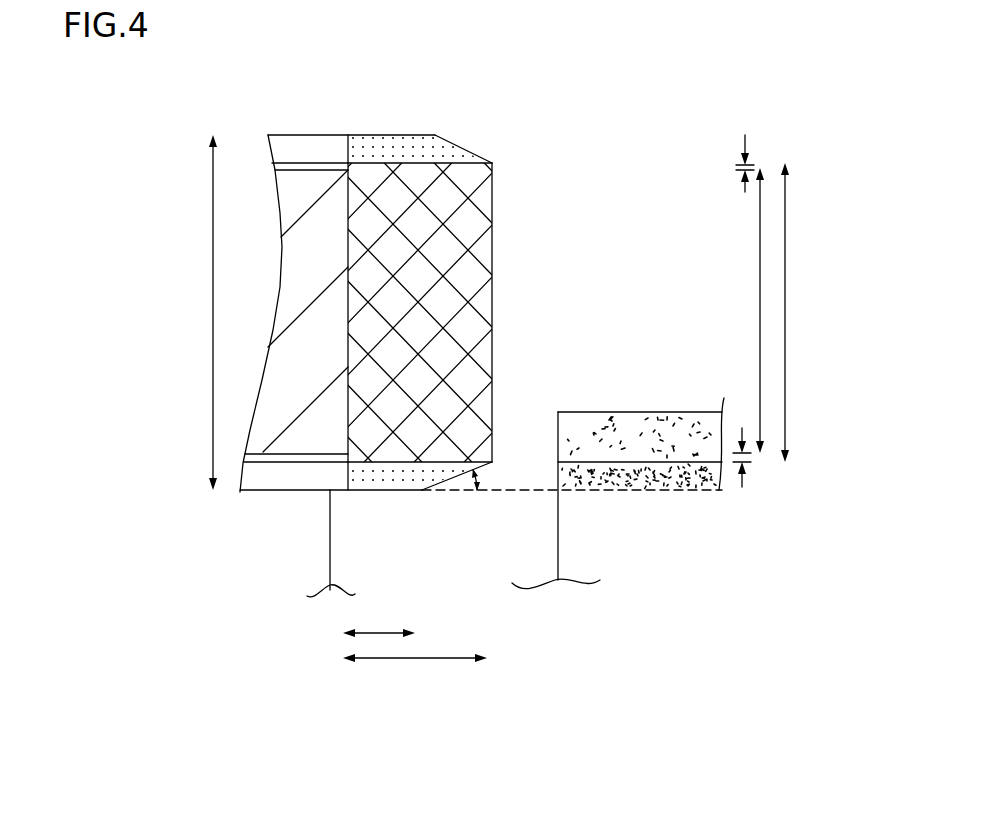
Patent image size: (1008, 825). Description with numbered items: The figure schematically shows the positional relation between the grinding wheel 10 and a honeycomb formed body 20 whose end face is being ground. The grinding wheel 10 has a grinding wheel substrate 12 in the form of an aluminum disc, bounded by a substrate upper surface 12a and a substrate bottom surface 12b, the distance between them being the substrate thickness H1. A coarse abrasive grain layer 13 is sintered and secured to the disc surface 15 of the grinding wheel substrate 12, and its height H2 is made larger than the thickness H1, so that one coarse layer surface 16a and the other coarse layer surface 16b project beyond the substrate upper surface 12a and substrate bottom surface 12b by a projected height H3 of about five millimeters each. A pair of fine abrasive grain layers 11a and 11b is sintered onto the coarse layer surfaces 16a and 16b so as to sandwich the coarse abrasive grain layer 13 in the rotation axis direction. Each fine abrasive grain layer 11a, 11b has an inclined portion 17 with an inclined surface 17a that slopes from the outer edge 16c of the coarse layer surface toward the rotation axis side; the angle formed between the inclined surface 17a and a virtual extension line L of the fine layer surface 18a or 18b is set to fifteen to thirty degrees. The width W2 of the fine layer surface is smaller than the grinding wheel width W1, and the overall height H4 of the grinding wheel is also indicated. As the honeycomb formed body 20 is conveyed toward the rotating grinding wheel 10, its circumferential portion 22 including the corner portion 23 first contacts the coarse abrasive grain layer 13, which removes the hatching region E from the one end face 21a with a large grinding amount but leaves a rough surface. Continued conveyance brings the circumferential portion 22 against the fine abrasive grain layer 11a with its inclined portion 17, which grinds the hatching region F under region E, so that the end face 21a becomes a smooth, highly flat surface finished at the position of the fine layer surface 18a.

The grinding wheel 10 is at (418, 327).
The fine abrasive grain layer 11a is at (353, 493).
The fine abrasive grain layer 11b is at (407, 147).
The grinding wheel substrate 12 is at (283, 134).
The substrate upper surface 12a is at (308, 465).
The substrate bottom surface 12b is at (312, 168).
The coarse abrasive grain layer 13 is at (470, 248).
The disc surface 15 is at (356, 192).
The coarse layer surface 16a is at (387, 463).
The coarse layer surface 16b is at (447, 162).
The outer edge 16c is at (493, 161).
The inclined portion 17 is at (495, 311).
The inclined surface 17a is at (477, 152).
The fine layer surface 18a is at (407, 492).
The fine layer surface 18b is at (422, 134).
The honeycomb formed body 20 is at (618, 445).
The one end face 21a is at (641, 411).
The circumferential portion 22 is at (558, 578).
The corner portion 23 is at (561, 411).
The hatching region E is at (700, 418).
The hatching region F is at (690, 480).
The virtual extension line L is at (540, 494).
The thickness of the grinding wheel substrate H1 is at (759, 303).
The height of the coarse abrasive grain layer H2 is at (786, 283).
The height of projected portion H3 is at (742, 167).
The height of the grinding wheel H4 is at (214, 282).
The grinding wheel width W1 is at (426, 661).
The width of the fine layer surface W2 is at (380, 631).